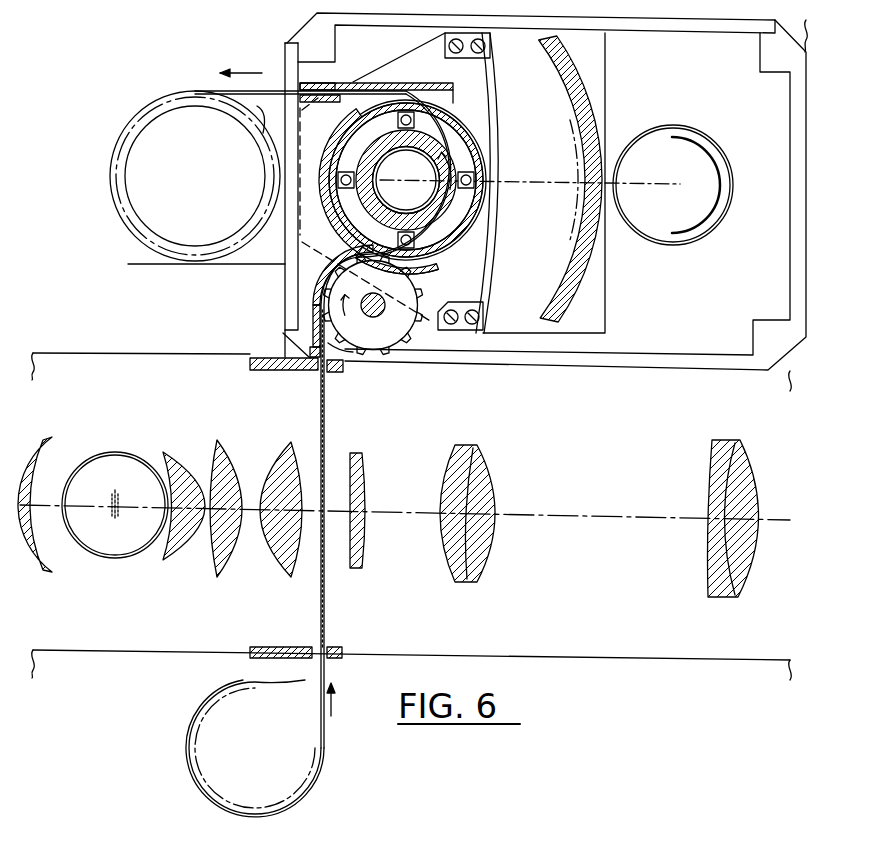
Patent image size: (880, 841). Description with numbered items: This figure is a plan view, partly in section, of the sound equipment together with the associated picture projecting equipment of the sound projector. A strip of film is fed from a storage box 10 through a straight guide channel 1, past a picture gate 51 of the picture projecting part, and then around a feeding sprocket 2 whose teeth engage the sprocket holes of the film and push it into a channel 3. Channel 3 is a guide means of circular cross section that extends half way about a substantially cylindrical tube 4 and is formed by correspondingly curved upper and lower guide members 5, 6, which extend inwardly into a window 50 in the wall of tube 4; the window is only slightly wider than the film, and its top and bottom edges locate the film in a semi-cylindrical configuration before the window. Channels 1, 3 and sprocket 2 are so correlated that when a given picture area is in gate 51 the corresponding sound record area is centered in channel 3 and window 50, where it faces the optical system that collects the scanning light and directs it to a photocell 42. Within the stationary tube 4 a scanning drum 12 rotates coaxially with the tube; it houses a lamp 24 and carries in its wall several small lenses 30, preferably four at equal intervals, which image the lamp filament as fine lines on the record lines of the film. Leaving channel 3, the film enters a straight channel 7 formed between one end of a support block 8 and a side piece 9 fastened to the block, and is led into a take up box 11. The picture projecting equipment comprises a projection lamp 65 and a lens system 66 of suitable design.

The straight guide channel 1 is at (330, 620).
The feeding sprocket 2 is at (398, 332).
The channel 3 is at (476, 233).
The substantially cylindrical tube 4 is at (338, 145).
The upper guide member 5 is at (436, 264).
The lower guide member 6 is at (397, 266).
The straight channel 7 is at (300, 80).
The support block 8 is at (302, 272).
The side piece 9 is at (402, 88).
The storage box 10 is at (298, 792).
The take up box 11 is at (136, 236).
The scanning drum 12 is at (452, 128).
The lamp 24 is at (386, 193).
The small lenses 30 is at (395, 118).
The photocell 42 is at (660, 245).
The window 50 is at (494, 208).
The picture gate 51 is at (312, 558).
The projection lamp 65 is at (110, 558).
The lens system 66 is at (210, 575).